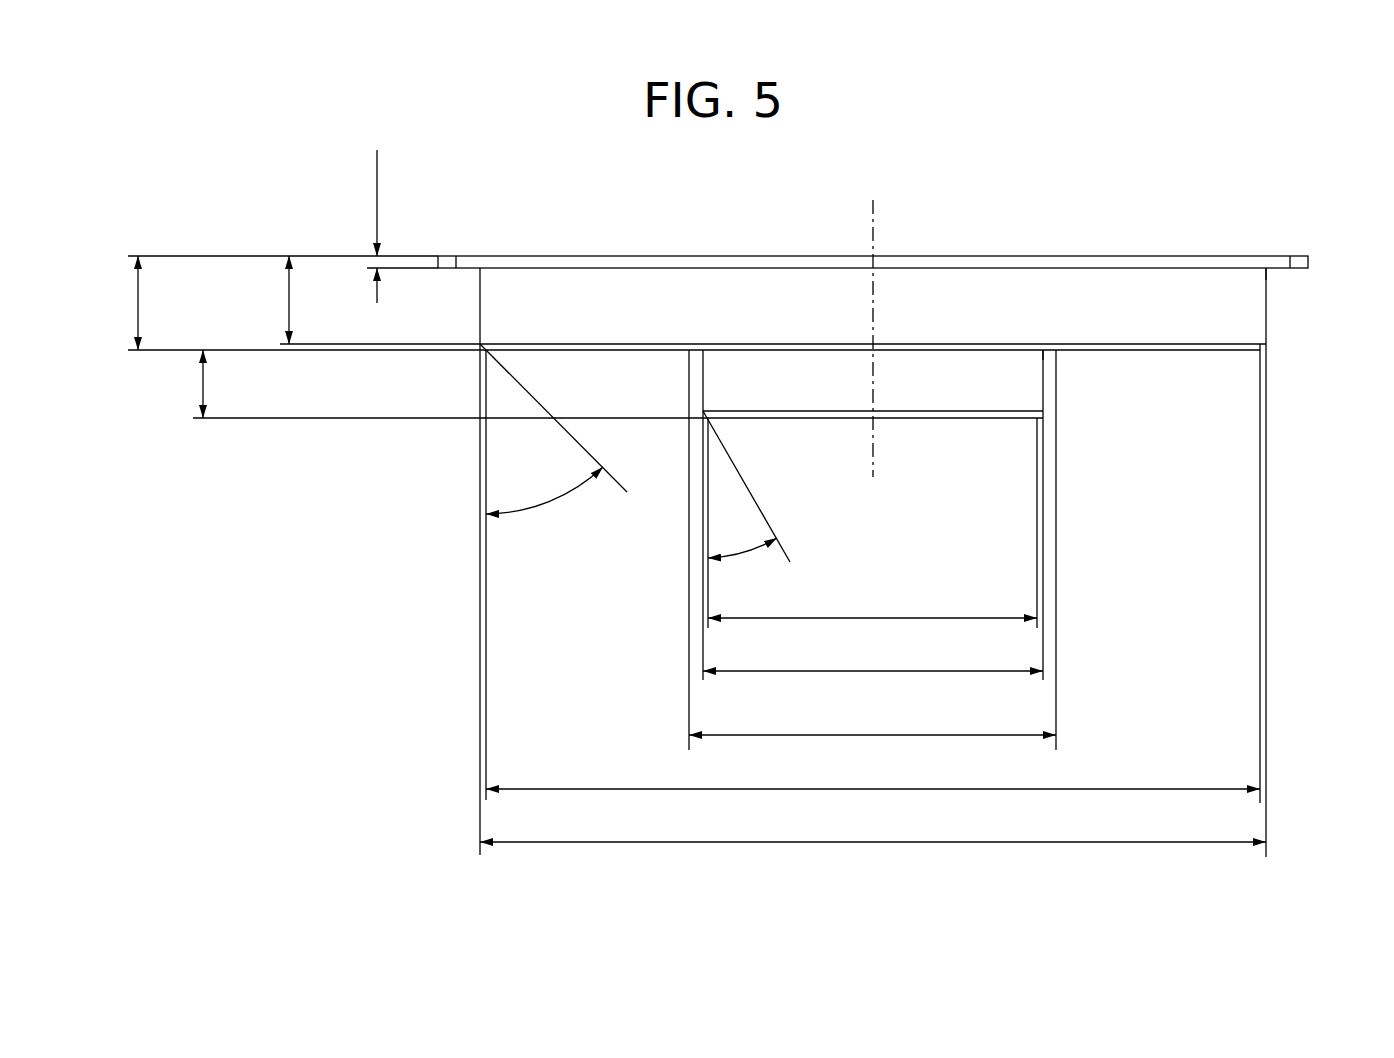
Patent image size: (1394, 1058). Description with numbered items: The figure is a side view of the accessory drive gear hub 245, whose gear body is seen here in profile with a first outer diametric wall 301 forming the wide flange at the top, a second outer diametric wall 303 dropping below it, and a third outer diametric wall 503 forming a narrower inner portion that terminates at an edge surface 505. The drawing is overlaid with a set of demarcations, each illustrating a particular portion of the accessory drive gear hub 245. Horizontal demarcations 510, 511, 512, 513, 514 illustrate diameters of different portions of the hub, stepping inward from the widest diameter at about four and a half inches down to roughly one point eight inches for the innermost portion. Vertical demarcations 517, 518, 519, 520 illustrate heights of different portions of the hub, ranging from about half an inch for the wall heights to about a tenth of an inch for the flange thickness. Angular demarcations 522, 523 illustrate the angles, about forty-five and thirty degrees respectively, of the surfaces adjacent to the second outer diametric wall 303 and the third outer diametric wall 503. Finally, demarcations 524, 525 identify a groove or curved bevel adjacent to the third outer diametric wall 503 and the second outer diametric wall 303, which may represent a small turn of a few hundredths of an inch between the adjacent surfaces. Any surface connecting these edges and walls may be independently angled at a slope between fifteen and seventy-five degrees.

The accessory drive gear hub 245 is at (1083, 140).
The first outer diametric wall 301 is at (592, 262).
The second outer diametric wall 303 is at (958, 300).
The third outer diametric wall 503 is at (965, 390).
The edge surface 505 is at (770, 414).
The demarcation 510 is at (873, 825).
The demarcation 511 is at (873, 774).
The demarcation 512 is at (872, 720).
The demarcation 513 is at (873, 657).
The demarcation 514 is at (872, 602).
The demarcation 517 is at (179, 384).
The demarcation 518 is at (114, 303).
The demarcation 519 is at (289, 256).
The demarcation 520 is at (377, 150).
The demarcation 522 is at (544, 500).
The demarcation 523 is at (742, 563).
The demarcation 524 is at (1047, 354).
The demarcation 525 is at (1271, 274).